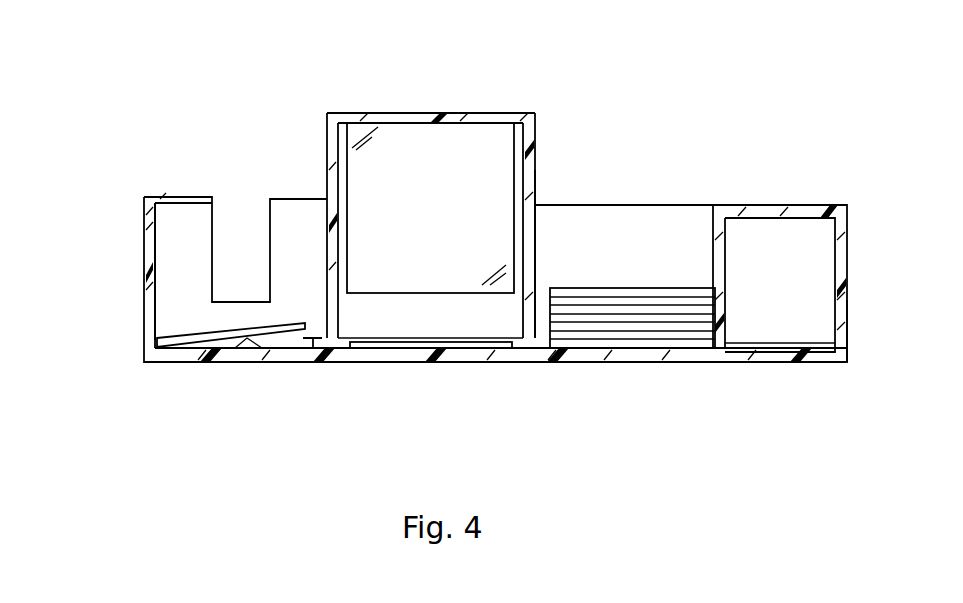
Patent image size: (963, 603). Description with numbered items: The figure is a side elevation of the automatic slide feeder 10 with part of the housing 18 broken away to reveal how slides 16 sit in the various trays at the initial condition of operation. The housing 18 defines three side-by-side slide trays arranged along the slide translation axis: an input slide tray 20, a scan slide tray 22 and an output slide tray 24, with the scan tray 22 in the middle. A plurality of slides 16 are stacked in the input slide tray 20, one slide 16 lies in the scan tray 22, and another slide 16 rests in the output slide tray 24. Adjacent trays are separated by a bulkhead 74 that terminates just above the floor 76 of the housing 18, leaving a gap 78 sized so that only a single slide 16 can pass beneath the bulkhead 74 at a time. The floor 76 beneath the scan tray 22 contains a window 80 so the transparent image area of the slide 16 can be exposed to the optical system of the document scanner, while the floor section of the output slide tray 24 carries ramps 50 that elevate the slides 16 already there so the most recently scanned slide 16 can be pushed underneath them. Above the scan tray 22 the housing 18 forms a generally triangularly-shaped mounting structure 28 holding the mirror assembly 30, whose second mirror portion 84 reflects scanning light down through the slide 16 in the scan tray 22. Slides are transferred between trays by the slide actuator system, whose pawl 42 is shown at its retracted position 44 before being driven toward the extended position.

The automatic slide feeder 10 is at (133, 62).
The slide 16 is at (305, 283).
The housing 18 is at (750, 205).
The input slide tray 20 is at (613, 260).
The scan slide tray 22 is at (398, 335).
The output slide tray 24 is at (202, 265).
The mounting structure 28 is at (433, 113).
The mirror assembly 30 is at (517, 138).
The pawl 42 is at (805, 317).
The retracted position 44 is at (745, 343).
The ramps 50 is at (230, 343).
The bulkhead 74 is at (335, 155).
The floor 76 is at (537, 178).
The gap 78 is at (317, 345).
The window 80 is at (377, 352).
The second mirror portion 84 is at (440, 223).